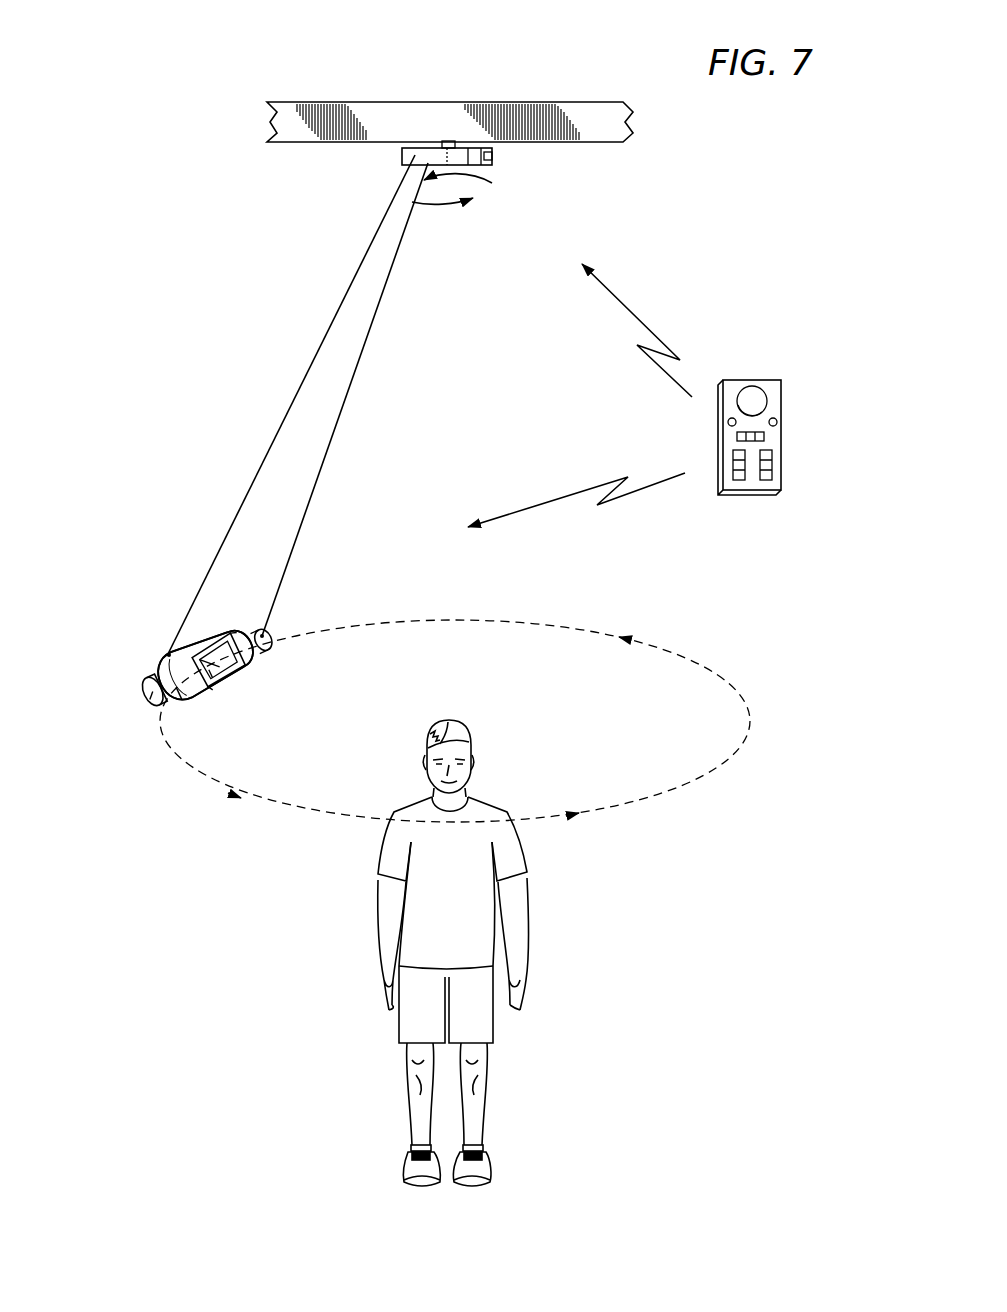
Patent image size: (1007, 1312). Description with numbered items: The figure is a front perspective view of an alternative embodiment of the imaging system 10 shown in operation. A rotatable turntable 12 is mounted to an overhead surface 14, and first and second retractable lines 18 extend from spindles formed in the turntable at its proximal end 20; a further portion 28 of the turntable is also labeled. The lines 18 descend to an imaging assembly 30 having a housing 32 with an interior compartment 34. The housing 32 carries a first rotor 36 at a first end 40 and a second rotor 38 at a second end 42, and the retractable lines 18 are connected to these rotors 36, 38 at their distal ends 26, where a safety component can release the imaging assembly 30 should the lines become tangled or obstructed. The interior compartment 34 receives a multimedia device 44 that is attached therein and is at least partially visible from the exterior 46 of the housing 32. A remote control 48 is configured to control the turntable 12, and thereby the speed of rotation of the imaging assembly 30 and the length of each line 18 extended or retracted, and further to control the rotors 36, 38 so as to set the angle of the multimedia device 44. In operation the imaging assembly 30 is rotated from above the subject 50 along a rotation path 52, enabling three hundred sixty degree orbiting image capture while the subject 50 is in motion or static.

The imaging system 10 is at (200, 229).
The overhead surface 14 is at (288, 128).
The proximal end 20 is at (396, 161).
The motor/drive of mount 28 is at (487, 156).
The rotatable turntable 12 is at (472, 167).
The retractable lines 18 is at (272, 443).
The distal end 26 is at (170, 648).
The imaging assembly 30 is at (161, 649).
The housing 32 is at (203, 703).
The interior compartment 34 is at (243, 666).
The first rotor 36 is at (146, 681).
The second rotor 38 is at (273, 651).
The first end 40 is at (134, 698).
The second end 42 is at (277, 644).
The multimedia device 44 is at (222, 682).
The exterior 46 is at (183, 685).
The remote control 48 is at (782, 403).
The subject 50 is at (490, 790).
The rotation path 52 is at (708, 775).